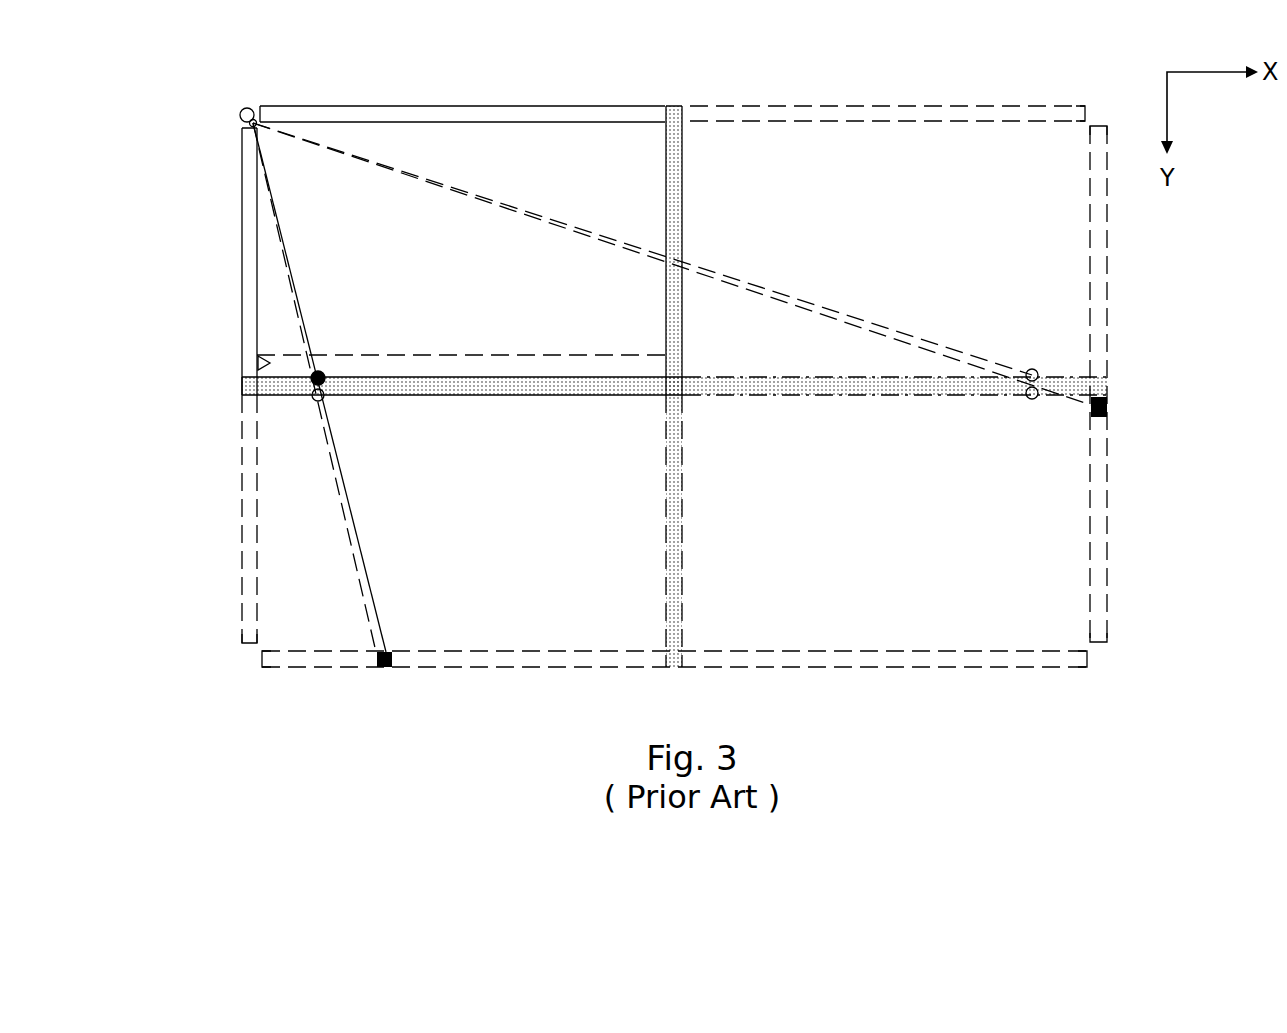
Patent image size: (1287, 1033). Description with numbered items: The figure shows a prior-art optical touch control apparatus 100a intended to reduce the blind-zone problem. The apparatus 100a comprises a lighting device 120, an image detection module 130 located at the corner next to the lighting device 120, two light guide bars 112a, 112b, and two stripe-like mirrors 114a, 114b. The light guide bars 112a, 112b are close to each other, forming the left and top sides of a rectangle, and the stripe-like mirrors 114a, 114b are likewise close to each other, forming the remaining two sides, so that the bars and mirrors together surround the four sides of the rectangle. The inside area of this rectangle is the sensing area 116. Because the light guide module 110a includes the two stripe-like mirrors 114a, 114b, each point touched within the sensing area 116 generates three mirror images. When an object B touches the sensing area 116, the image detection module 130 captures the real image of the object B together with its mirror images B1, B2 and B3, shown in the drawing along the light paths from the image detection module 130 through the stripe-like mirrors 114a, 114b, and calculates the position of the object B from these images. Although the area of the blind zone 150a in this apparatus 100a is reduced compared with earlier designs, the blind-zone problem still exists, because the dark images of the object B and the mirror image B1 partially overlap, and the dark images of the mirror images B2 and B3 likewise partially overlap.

The optical touch control apparatus 100a is at (1216, 674).
The light guide module 110a is at (411, 213).
The light guide bar 112a is at (242, 240).
The light guide bar 112b is at (530, 113).
The stripe-like mirror 114a is at (244, 385).
The stripe-like mirror 114b is at (680, 160).
The sensing area 116 is at (442, 152).
The lighting device 120 is at (245, 107).
The image detection module 130 is at (250, 125).
The blind zone 150a is at (253, 364).
The object B is at (326, 374).
The mirror image B1 is at (311, 402).
The mirror image B2 is at (1032, 368).
The mirror image B3 is at (1032, 400).